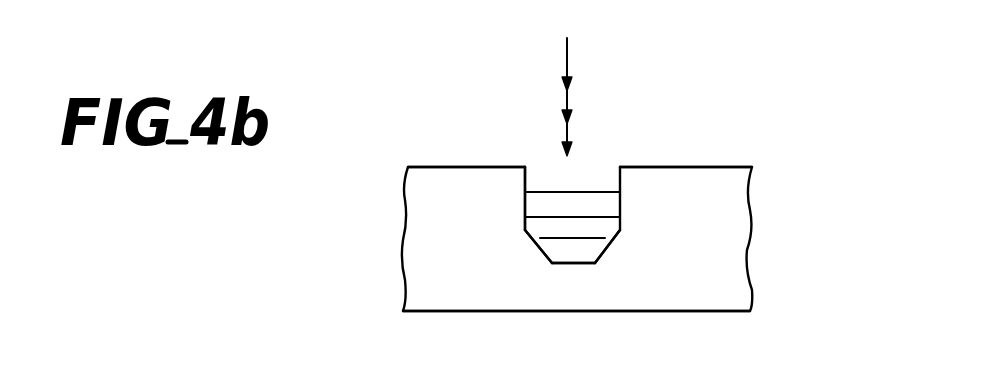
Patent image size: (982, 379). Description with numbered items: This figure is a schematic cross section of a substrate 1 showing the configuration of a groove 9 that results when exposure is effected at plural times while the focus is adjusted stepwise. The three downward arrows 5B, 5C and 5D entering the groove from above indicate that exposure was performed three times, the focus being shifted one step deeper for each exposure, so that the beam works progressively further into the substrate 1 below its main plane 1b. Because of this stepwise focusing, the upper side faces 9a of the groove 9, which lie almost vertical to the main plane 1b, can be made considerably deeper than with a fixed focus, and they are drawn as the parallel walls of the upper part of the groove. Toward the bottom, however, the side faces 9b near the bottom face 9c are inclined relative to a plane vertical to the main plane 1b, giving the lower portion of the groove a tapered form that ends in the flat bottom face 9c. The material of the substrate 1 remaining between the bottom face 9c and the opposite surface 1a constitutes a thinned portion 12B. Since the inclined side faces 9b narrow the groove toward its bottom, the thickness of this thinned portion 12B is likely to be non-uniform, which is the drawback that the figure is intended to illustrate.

The substrate 1 is at (728, 228).
The bottom surface of substrate 1a is at (690, 311).
The main plane 1b is at (715, 167).
The groove 9 is at (545, 150).
The faces almost vertical to the main plane 9a is at (528, 200).
The side faces 9b is at (548, 245).
The bottom face 9c is at (580, 263).
The thinned portion 12B is at (573, 292).
The first exposure 5B is at (570, 53).
The second exposure 5C is at (570, 103).
The third exposure 5D is at (570, 135).